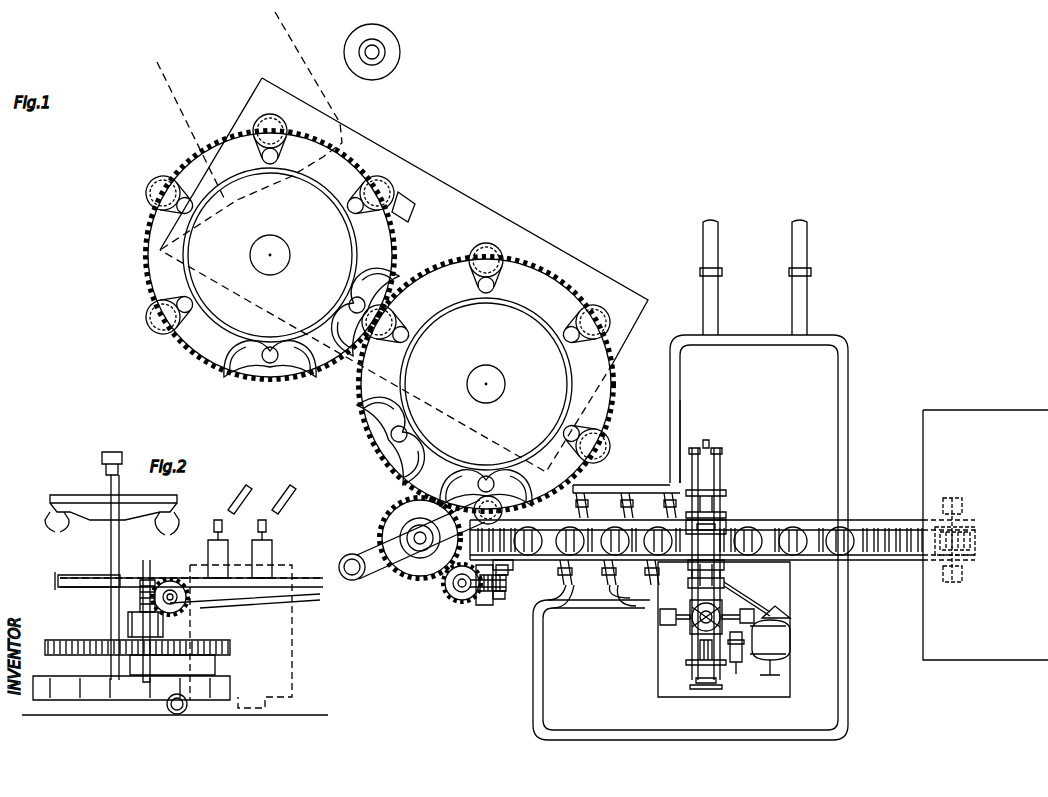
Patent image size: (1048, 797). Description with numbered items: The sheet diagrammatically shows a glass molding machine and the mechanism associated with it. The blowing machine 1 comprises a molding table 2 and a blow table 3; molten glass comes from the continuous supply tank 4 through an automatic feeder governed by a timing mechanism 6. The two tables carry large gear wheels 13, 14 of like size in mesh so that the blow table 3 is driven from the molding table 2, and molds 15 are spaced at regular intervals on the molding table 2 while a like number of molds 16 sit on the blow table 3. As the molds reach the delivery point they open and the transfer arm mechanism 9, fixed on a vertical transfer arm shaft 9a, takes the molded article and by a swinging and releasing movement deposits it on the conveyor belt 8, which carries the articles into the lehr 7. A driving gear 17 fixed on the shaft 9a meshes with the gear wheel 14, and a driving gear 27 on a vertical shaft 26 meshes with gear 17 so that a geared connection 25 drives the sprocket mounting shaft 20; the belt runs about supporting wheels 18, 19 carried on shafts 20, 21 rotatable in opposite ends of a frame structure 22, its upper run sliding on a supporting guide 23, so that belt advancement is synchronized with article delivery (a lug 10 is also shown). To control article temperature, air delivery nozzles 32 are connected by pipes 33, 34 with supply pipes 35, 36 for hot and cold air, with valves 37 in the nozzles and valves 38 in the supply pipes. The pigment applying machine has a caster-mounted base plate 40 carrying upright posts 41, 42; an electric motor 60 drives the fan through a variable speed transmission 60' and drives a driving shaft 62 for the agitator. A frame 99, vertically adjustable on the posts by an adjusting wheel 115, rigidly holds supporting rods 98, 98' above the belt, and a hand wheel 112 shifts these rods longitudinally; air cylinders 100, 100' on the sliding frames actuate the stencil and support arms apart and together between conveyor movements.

In FIG. 1, the blowing machine 1 is at (495, 215).
In FIG. 1, the molding table 2 is at (330, 195).
In FIG. 1, the blow table 3 is at (545, 312).
In FIG. 2, the blow table 3 is at (58, 577).
In FIG. 1, the continuous supply tank 4 is at (185, 119).
In FIG. 1, the timing mechanism 6 is at (390, 62).
In FIG. 1, the lehr 7 is at (958, 412).
In FIG. 1, the conveyor belt 8 is at (882, 528).
In FIG. 2, the conveyor belt 8 is at (305, 588).
In FIG. 1, the transfer arm mechanism 9 is at (372, 570).
In FIG. 2, the transfer arm mechanism 9 is at (90, 495).
In FIG. 1, the transfer arm shaft 9a is at (406, 528).
In FIG. 2, the transfer arm shaft 9a is at (110, 552).
In FIG. 1, the stop lug 10 is at (410, 214).
In FIG. 1, the gear wheel 13 is at (193, 352).
In FIG. 1, the gear wheel 14 is at (378, 443).
In FIG. 1, the molds 15 is at (390, 190).
In FIG. 1, the molds 16 is at (610, 316).
In FIG. 1, the driving gear 17 is at (420, 580).
In FIG. 2, the driving gear 17 is at (108, 656).
In FIG. 1, the supporting wheel 18 is at (510, 562).
In FIG. 1, the supporting wheel 19 is at (978, 540).
In FIG. 1, the sprocket mounting shaft 20 is at (498, 600).
In FIG. 2, the sprocket mounting shaft 20 is at (190, 600).
In FIG. 1, the shaft 21 is at (960, 578).
In FIG. 2, the frame structure 22 is at (283, 660).
In FIG. 1, the supporting guide 23 is at (796, 528).
In FIG. 1, the geared connection 25 is at (486, 612).
In FIG. 2, the geared connection 25 is at (152, 580).
In FIG. 1, the vertical shaft 26 is at (460, 603).
In FIG. 2, the vertical shaft 26 is at (110, 628).
In FIG. 1, the driving gear 27 is at (455, 598).
In FIG. 2, the driving gear 27 is at (130, 656).
In FIG. 1, the air delivery nozzles 32 is at (573, 586).
In FIG. 1, the pipe 33 is at (849, 380).
In FIG. 1, the pipe 34 is at (682, 382).
In FIG. 1, the supply pipe 35 is at (809, 298).
In FIG. 1, the supply pipe 36 is at (719, 298).
In FIG. 1, the valves 37 is at (633, 488).
In FIG. 1, the valves 38 is at (722, 272).
In FIG. 1, the base plate 40 is at (662, 680).
In FIG. 1, the upright post 41 is at (675, 607).
In FIG. 1, the upright post 42 is at (792, 616).
In FIG. 1, the electric motor 60 is at (790, 647).
In FIG. 1, the variable speed transmission gear mechanism 60' is at (744, 660).
In FIG. 1, the driving shaft 62 is at (772, 598).
In FIG. 1, the supporting rod 98 is at (697, 620).
In FIG. 1, the supporting rod 98' is at (727, 500).
In FIG. 1, the frame 99 is at (700, 628).
In FIG. 1, the cylinder 100 is at (726, 574).
In FIG. 1, the cylinder 100' is at (732, 511).
In FIG. 1, the hand wheel 112 is at (700, 688).
In FIG. 1, the adjusting wheel 115 is at (690, 624).